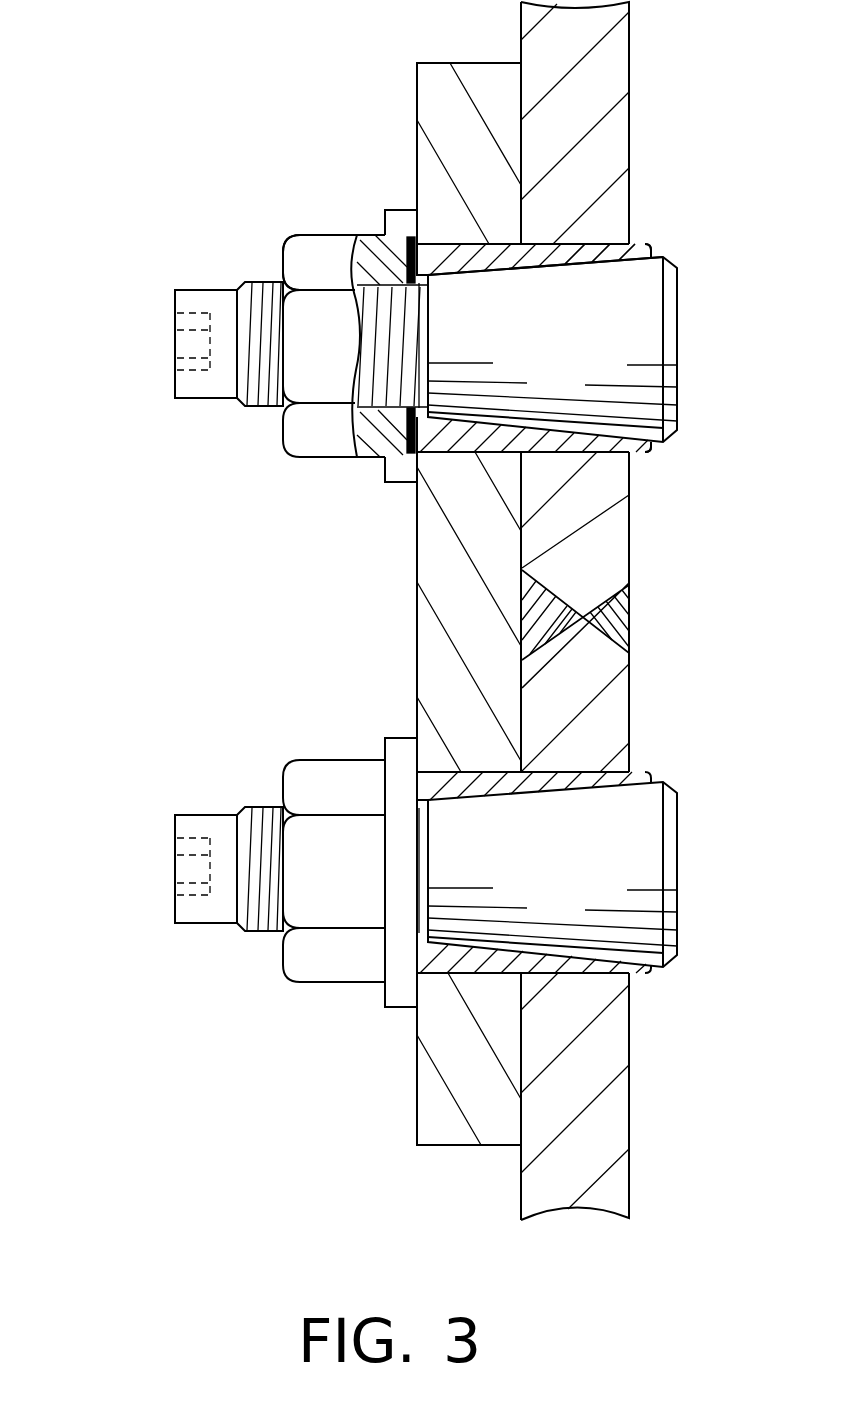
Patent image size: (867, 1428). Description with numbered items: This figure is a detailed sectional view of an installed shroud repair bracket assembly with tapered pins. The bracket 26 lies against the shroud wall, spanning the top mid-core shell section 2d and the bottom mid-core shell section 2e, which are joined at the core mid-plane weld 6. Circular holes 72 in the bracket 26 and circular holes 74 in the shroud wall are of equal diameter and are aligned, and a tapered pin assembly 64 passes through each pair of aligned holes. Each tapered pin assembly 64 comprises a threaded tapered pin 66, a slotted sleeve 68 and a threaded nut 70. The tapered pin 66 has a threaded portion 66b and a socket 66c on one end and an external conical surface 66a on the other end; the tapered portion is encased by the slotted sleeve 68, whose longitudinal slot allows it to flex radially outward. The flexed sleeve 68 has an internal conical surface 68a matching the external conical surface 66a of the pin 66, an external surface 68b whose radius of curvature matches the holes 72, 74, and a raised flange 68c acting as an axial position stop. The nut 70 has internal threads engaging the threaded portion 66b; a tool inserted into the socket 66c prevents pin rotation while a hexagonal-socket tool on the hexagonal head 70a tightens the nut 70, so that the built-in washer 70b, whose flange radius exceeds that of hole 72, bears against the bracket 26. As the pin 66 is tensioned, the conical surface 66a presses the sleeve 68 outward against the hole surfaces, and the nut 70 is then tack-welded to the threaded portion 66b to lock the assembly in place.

The top mid-core shell section 2d is at (617, 53).
The bottom mid-core shell section 2e is at (612, 1046).
The core mid-plane weld 6 is at (632, 608).
The bracket 26 is at (417, 93).
The tapered pin assembly 64 is at (160, 250).
The threaded tapered pin 66 is at (677, 357).
The external conical surface 66a is at (500, 260).
The threaded portion 66b is at (418, 317).
The socket 66c is at (192, 343).
The slotted sleeve 68 is at (445, 445).
The internal conical surface 68a is at (612, 262).
The external cylindrical surface 68b is at (587, 248).
The raised flange 68c is at (641, 458).
The threaded nut 70 is at (313, 447).
The hexagonal head 70a is at (315, 233).
The built-in washer 70b is at (405, 210).
The circular holes in bracket 72 is at (445, 243).
The circular holes in shroud wall 74 is at (549, 240).